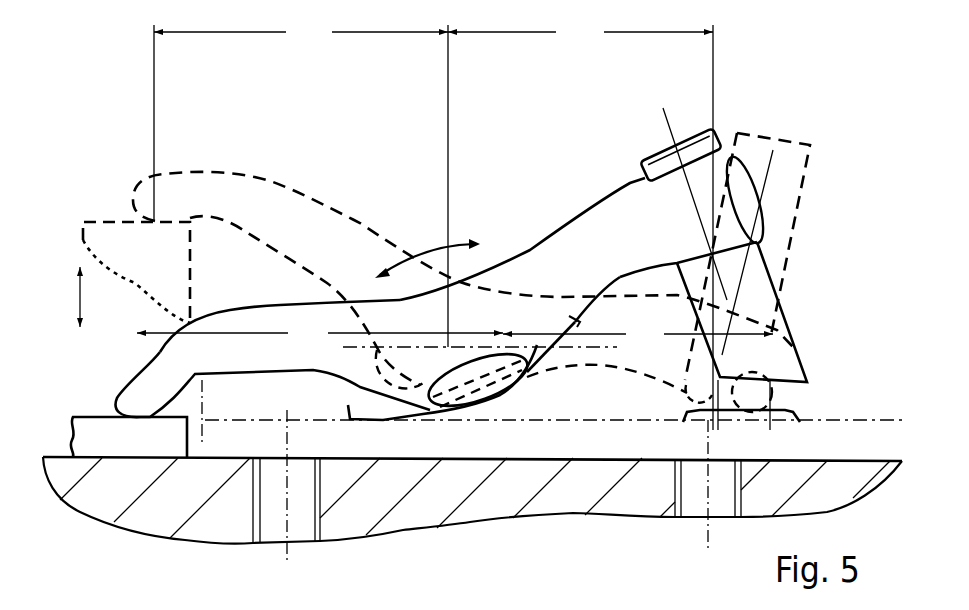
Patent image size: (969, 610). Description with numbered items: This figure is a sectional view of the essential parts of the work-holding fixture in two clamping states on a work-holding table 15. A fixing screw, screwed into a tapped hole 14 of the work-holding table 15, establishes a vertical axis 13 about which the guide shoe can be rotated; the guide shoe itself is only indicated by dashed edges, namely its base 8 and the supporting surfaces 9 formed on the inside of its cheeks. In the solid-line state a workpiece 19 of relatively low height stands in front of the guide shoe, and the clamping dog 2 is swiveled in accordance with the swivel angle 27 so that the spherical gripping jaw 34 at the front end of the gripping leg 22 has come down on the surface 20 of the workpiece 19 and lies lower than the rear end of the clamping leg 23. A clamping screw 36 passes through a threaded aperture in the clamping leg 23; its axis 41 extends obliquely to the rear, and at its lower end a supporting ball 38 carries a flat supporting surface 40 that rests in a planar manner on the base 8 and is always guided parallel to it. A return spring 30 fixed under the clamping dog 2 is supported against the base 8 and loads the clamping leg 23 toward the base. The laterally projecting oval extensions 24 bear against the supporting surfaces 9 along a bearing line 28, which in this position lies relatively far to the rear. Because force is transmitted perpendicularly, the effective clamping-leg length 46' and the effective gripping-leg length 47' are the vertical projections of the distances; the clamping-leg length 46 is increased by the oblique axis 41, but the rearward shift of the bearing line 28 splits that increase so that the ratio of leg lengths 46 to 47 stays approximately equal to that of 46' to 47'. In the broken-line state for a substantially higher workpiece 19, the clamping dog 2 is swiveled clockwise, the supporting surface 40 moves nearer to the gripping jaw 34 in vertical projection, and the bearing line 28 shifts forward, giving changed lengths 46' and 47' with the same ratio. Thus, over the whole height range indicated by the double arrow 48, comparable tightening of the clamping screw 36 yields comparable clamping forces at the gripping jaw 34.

The clamping dog 2 is at (288, 303).
The base 8 is at (578, 423).
The supporting surfaces 9 is at (589, 348).
The vertical axis 13 is at (262, 541).
The tapped hole 14 is at (293, 530).
The work-holding table 15 is at (513, 490).
The workpiece 19 is at (117, 240).
The surface 20 is at (97, 420).
The gripping leg 22 is at (237, 323).
The clamping leg 23 is at (583, 250).
The extensions 24 is at (462, 374).
The swivel angle 27 is at (440, 247).
The bearing line 28 is at (505, 345).
The return spring 30 is at (388, 423).
The gripping jaw 34 is at (137, 413).
The clamping screw 36 is at (778, 270).
The supporting ball 38 is at (793, 380).
The supporting surface 40 is at (803, 423).
The axis 41 is at (700, 212).
The clamping-leg length 46 is at (638, 335).
The gripping-leg length 47 is at (320, 333).
The effective clamping-leg length 46' is at (580, 224).
The effective gripping-leg length 47' is at (301, 120).
The double arrow 48 is at (80, 298).